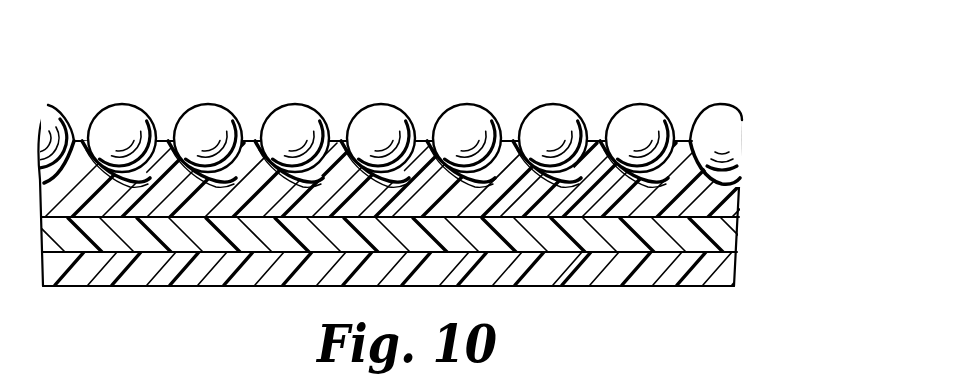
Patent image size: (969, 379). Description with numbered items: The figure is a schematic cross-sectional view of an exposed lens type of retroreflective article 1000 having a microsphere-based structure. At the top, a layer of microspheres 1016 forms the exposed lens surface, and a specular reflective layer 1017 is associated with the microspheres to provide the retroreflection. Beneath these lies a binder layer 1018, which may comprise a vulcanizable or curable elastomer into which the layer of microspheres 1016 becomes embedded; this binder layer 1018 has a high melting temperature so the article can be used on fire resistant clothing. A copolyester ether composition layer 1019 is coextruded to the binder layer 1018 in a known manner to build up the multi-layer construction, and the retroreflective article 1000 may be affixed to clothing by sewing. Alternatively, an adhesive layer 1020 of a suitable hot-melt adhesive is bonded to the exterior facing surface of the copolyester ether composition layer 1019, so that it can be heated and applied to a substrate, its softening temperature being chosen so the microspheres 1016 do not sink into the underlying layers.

The retroreflective article 1000 is at (713, 70).
The layer of microspheres 1016 is at (612, 122).
The specular reflective layer 1017 is at (737, 180).
The binder layer 1018 is at (730, 205).
The copolyester ether composition layer 1019 is at (723, 227).
The adhesive layer 1020 is at (632, 278).